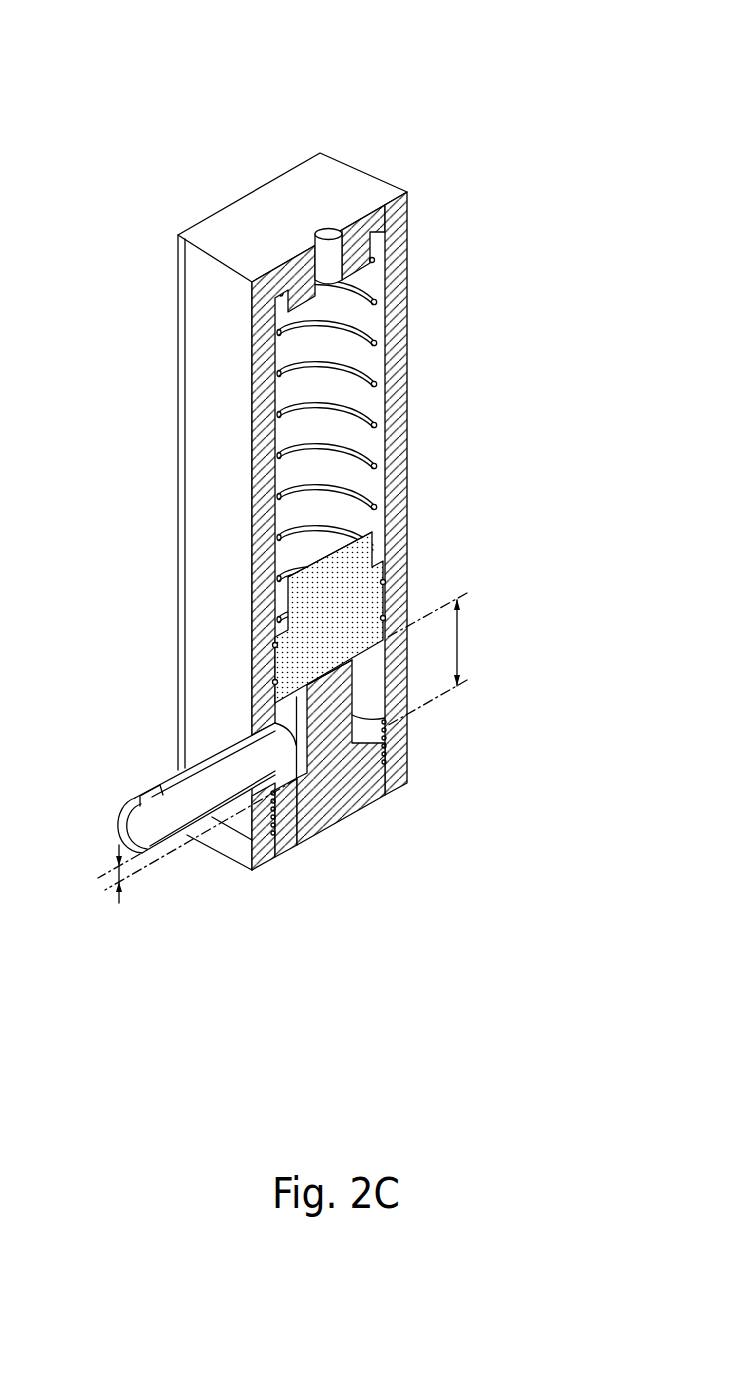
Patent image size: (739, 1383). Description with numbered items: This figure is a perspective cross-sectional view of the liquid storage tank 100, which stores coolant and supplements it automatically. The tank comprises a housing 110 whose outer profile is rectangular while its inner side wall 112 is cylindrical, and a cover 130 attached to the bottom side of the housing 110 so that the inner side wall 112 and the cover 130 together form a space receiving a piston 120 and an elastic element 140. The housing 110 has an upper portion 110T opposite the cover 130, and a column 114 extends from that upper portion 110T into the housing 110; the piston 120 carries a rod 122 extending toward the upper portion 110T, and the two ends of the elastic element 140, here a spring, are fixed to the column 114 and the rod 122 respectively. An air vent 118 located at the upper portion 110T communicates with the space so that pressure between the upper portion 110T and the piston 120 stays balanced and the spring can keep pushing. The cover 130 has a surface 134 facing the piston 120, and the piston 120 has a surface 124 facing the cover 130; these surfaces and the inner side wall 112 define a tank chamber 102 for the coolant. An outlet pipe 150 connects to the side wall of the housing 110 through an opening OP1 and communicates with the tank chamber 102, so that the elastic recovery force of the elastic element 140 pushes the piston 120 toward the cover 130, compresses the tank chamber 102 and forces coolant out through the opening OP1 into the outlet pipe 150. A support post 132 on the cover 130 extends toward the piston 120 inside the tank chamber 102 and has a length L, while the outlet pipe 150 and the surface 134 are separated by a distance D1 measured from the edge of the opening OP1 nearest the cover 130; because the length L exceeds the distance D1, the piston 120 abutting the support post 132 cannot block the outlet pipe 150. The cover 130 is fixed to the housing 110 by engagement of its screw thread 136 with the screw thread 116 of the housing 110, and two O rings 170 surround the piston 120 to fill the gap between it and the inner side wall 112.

The liquid storage tank 100 is at (82, 40).
The housing 110 is at (296, 473).
The upper portion 110T is at (345, 196).
The inner side wall 112 is at (355, 322).
The column 114 is at (355, 250).
The screw thread 116 is at (250, 815).
The air vent 118 is at (323, 233).
The piston 120 is at (397, 591).
The rod 122 is at (357, 553).
The surface 124 is at (270, 723).
The cover 130 is at (420, 752).
The support post 132 is at (338, 702).
The surface 134 is at (358, 732).
The screw thread 136 is at (273, 838).
The elastic element 140 is at (357, 415).
The outlet pipe 150 is at (165, 788).
The O ring 170 is at (382, 582).
The tank chamber 102 is at (366, 665).
The length of support post L is at (467, 642).
The distance D1 is at (104, 874).
The opening OP1 is at (284, 757).